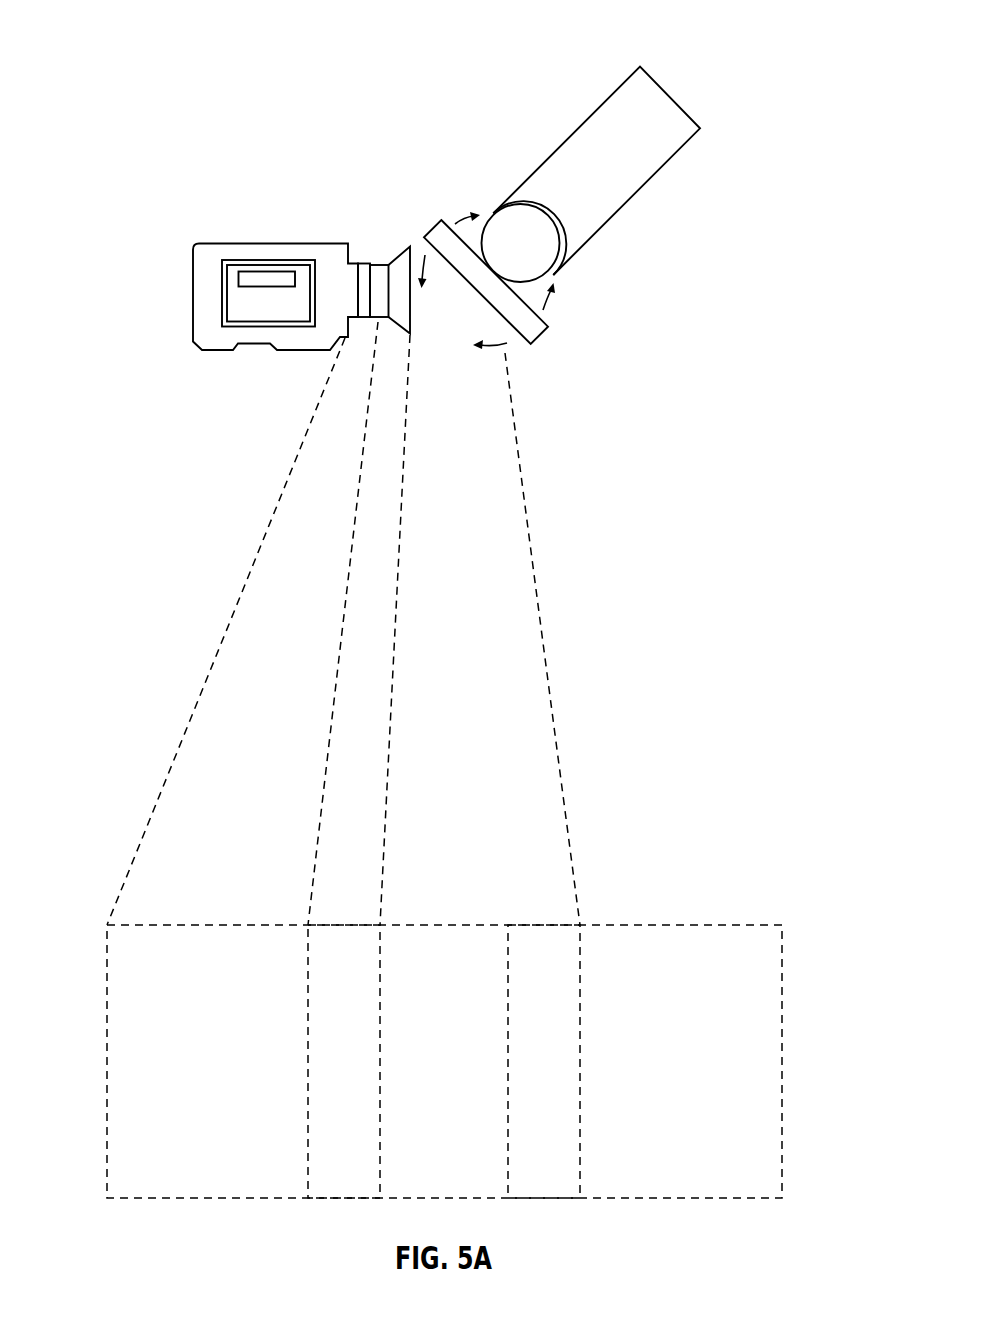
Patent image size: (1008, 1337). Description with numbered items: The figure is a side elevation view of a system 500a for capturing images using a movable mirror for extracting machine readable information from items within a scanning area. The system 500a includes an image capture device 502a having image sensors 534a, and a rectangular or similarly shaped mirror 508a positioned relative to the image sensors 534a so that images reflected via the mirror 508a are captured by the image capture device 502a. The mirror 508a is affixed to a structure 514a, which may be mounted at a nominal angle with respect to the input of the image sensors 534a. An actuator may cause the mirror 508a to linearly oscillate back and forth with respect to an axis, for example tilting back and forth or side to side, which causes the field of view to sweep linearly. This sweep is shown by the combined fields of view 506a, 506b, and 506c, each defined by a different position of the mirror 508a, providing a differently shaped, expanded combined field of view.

The system for capturing images 500a is at (163, 61).
The image capture device 502a is at (222, 244).
The image sensors 534a is at (412, 310).
The mirror 508a is at (544, 334).
The structure 514a is at (613, 90).
The field of view 506a is at (205, 925).
The field of view 506b is at (425, 925).
The field of view 506c is at (683, 925).